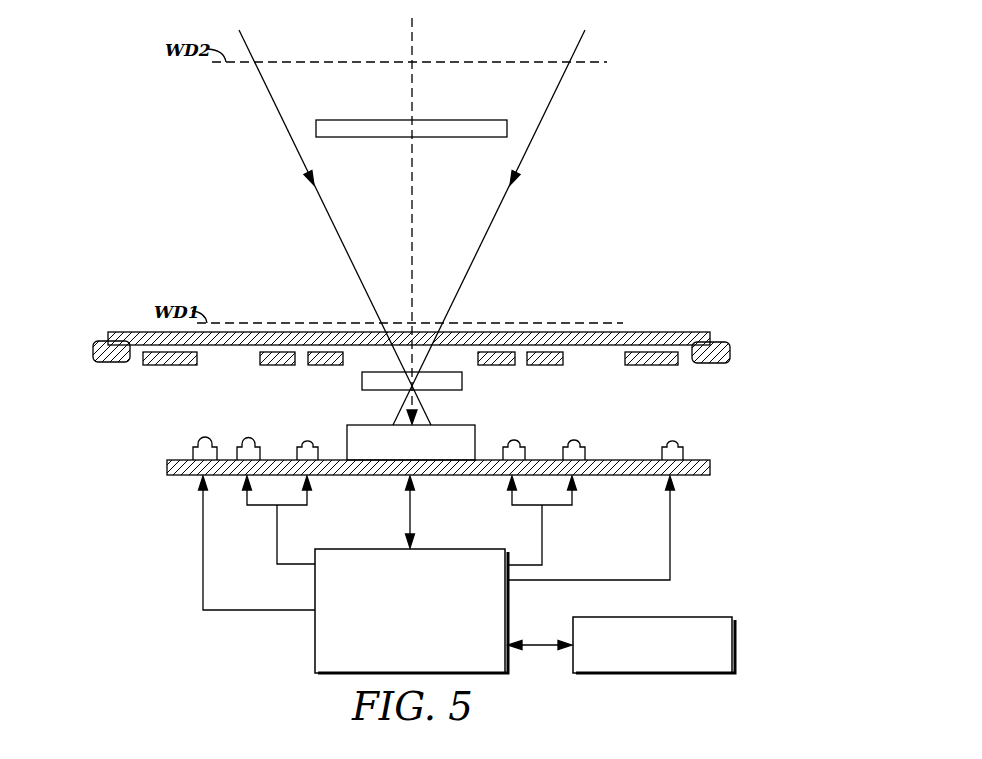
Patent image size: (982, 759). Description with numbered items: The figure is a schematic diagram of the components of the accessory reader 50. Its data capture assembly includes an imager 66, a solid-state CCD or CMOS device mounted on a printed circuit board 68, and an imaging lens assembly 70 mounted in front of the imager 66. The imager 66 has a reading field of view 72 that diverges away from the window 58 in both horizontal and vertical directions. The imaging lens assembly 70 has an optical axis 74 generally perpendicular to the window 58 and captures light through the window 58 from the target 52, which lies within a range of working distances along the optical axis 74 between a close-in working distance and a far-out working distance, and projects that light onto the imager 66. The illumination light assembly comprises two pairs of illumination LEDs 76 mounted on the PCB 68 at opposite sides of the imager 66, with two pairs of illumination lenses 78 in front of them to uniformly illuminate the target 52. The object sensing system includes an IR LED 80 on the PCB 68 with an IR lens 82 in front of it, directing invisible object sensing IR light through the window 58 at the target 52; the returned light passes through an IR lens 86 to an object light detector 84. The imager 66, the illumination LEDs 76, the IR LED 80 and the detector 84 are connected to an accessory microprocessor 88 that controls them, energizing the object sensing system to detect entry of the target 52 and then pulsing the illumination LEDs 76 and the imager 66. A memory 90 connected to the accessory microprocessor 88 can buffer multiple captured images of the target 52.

The accessory reader 50 is at (753, 340).
The target 52 is at (473, 120).
The window 58 is at (122, 330).
The imager 66 is at (374, 424).
The printed circuit board 68 is at (711, 470).
The imaging lens assembly 70 is at (373, 372).
The reading field of view 72 is at (551, 98).
The optical axis 74 is at (413, 32).
The illumination light emitting diodes 76 is at (575, 416).
The illumination lenses 78 is at (540, 352).
The infrared light emitting diode 80 is at (192, 447).
The IR lens 82 is at (170, 366).
The object light detector 84 is at (684, 447).
The IR lens 86 is at (649, 366).
The accessory microprocessor 88 is at (314, 590).
The memory 90 is at (735, 644).